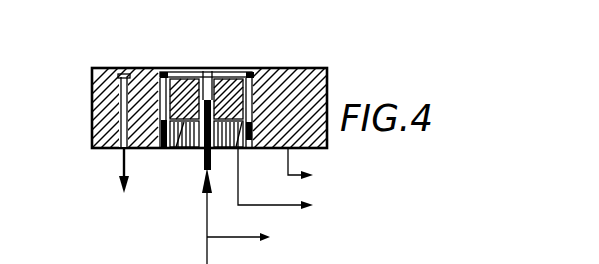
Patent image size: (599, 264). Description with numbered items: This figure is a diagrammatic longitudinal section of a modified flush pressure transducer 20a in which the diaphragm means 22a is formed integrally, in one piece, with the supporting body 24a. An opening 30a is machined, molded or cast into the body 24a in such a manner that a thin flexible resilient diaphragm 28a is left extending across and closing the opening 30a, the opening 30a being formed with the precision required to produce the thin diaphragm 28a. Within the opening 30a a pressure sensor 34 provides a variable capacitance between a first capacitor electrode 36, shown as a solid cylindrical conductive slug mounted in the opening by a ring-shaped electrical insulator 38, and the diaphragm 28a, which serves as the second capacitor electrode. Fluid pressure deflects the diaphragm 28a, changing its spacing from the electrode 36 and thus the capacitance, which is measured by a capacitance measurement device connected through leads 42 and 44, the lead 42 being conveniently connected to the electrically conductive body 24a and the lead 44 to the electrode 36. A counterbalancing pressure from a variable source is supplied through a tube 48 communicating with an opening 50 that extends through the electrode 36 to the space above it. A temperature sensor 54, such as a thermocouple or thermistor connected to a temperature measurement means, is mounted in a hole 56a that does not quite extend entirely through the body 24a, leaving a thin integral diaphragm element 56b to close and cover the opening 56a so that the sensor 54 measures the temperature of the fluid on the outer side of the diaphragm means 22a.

The modified flush pressure transducer 20a is at (78, 61).
The supporting body 24a is at (318, 100).
The temperature sensor 54 is at (120, 77).
The thin integral diaphragm element 56b is at (125, 72).
The temperature sensor opening 56a is at (115, 150).
The diaphragm means 22a is at (201, 58).
The pressure sensor 34 is at (172, 147).
The flexible resilient diaphragm 28a is at (186, 68).
The opening through the electrode 50 is at (213, 68).
The first capacitor electrode 36 is at (188, 147).
The ring-shaped electrical insulator 38 is at (243, 148).
The opening in the body 30a is at (327, 145).
The lead 42 is at (288, 162).
The lead 44 is at (275, 207).
The tube 48 is at (213, 166).